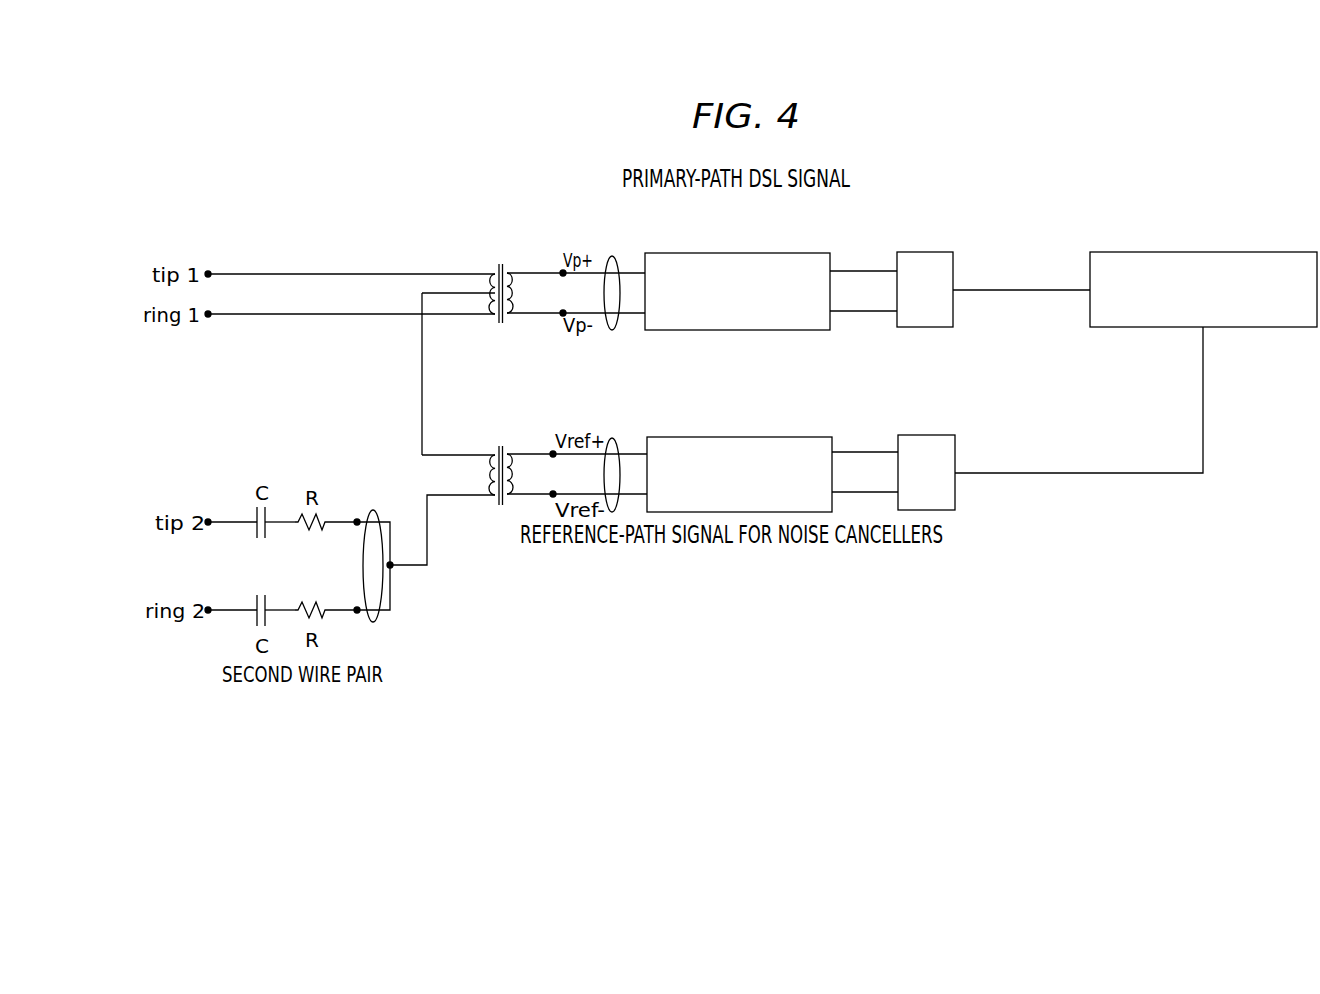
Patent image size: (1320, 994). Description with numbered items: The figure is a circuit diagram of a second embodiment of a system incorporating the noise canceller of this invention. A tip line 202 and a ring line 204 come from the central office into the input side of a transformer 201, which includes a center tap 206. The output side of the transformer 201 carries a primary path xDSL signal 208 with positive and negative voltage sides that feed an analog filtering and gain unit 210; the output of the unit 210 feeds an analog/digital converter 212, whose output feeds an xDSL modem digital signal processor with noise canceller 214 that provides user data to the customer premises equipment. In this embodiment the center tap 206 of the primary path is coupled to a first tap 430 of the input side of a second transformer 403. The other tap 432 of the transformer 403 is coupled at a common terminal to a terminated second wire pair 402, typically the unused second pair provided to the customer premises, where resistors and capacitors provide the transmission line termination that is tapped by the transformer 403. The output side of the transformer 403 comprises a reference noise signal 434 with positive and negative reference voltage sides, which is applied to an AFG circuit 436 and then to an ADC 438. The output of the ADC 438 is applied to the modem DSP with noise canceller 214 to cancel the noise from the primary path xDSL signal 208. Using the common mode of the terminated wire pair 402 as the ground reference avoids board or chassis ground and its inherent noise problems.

The transformer 201 is at (492, 270).
The tip 1 line 202 is at (400, 272).
The ring 1 line 204 is at (452, 316).
The center tap 206 is at (418, 304).
The primary path xDSL signal 208 is at (617, 260).
The analog filtering and gain unit 210 is at (735, 250).
The analog/digital converter 212 is at (926, 250).
The xDSL modem digital signal processor with noise canceller 214 is at (1198, 250).
The terminated second wire pair 402 is at (380, 612).
The transformer 403 is at (506, 447).
The first tap 430 is at (447, 455).
The other tap 432 is at (425, 493).
The reference noise signal 434 is at (618, 443).
The AFG circuit 436 is at (737, 435).
The ADC 438 is at (925, 433).